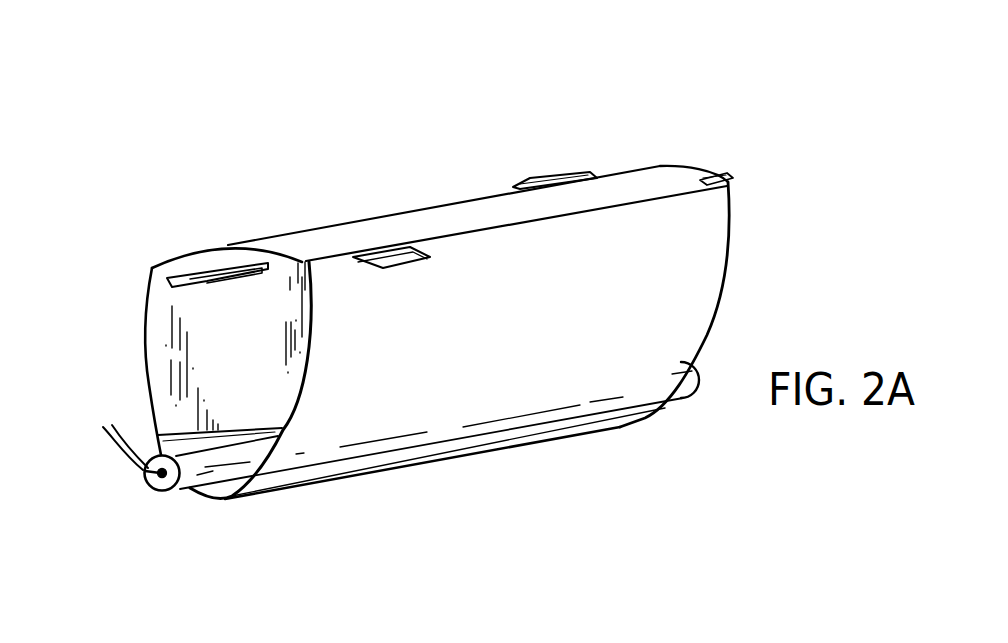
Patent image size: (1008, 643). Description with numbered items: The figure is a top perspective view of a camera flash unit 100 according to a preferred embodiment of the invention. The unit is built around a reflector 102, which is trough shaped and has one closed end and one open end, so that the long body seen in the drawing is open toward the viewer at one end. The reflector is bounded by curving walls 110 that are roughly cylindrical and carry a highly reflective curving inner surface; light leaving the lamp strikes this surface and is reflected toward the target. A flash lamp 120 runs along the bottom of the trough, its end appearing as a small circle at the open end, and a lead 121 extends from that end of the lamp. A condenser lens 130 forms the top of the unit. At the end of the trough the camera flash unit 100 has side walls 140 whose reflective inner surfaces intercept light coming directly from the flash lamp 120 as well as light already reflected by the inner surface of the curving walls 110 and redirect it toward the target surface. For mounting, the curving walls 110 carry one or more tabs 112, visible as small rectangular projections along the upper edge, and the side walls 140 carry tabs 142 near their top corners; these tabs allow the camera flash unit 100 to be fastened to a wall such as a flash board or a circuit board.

The camera flash unit 100 is at (668, 106).
The reflector 102 is at (584, 393).
The curving walls 110 is at (720, 293).
The tabs 112 is at (565, 182).
The flash lamp 120 is at (192, 490).
The lead wire 121 is at (118, 460).
The condenser lens 130 is at (210, 257).
The side walls 140 is at (158, 355).
The tabs 142 is at (155, 290).